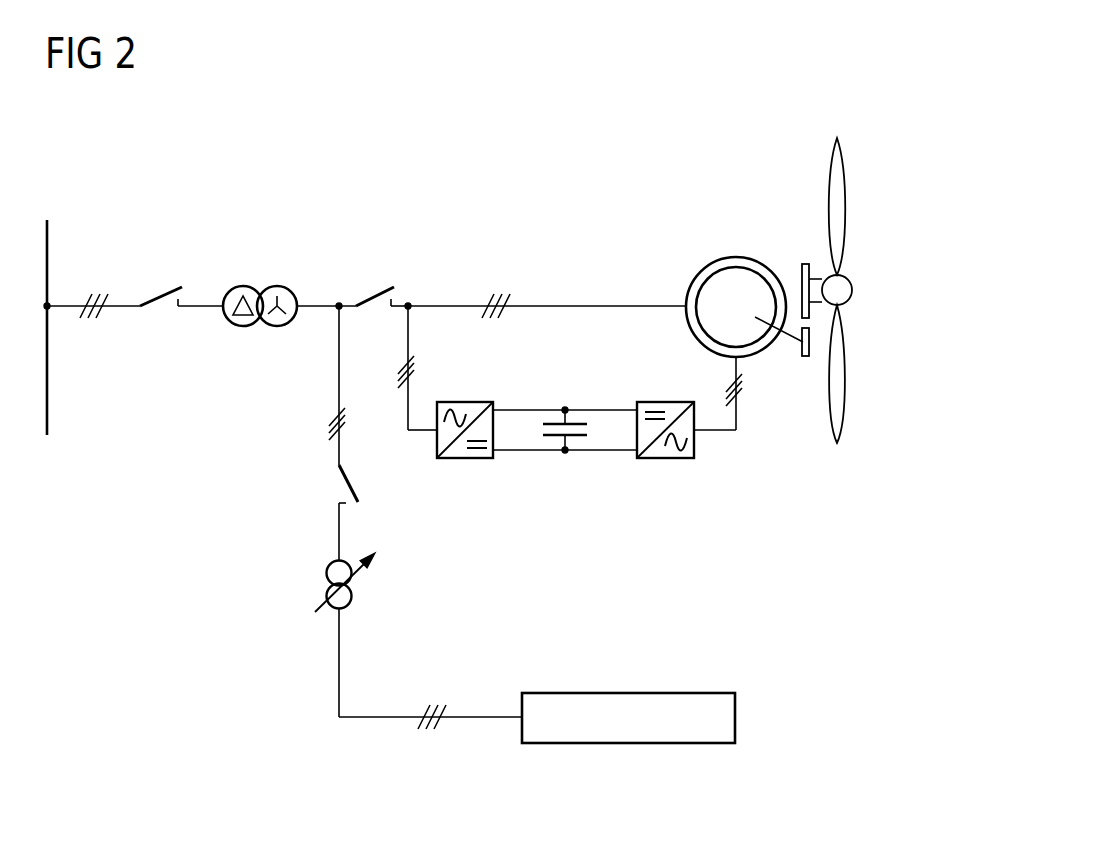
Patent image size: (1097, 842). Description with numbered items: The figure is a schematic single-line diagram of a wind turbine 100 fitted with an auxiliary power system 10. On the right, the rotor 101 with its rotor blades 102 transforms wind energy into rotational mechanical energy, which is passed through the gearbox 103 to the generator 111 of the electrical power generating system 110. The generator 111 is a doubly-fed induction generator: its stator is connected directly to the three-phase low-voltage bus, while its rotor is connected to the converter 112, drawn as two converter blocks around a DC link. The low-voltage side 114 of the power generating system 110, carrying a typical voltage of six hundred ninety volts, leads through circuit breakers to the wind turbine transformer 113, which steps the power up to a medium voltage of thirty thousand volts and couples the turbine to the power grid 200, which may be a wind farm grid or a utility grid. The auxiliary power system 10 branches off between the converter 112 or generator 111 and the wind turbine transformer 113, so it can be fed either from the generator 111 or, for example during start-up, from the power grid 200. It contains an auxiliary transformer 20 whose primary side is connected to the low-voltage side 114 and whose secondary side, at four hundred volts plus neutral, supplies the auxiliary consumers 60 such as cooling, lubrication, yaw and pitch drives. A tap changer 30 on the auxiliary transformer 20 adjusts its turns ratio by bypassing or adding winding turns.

The wind turbine 100 is at (603, 180).
The rotor 101 is at (885, 325).
The rotor blades 102 is at (837, 445).
The gearbox 103 is at (805, 357).
The electrical power generating system 110 is at (408, 227).
The generator 111 is at (736, 257).
The converter 112 is at (575, 493).
The wind turbine transformer 113 is at (243, 286).
The low voltage side 114 is at (317, 305).
The power grid 200 is at (48, 361).
The auxiliary power system 10 is at (331, 517).
The auxiliary transformer 20 is at (357, 597).
The tap changer 30 is at (324, 577).
The auxiliary consumers 60 is at (628, 693).